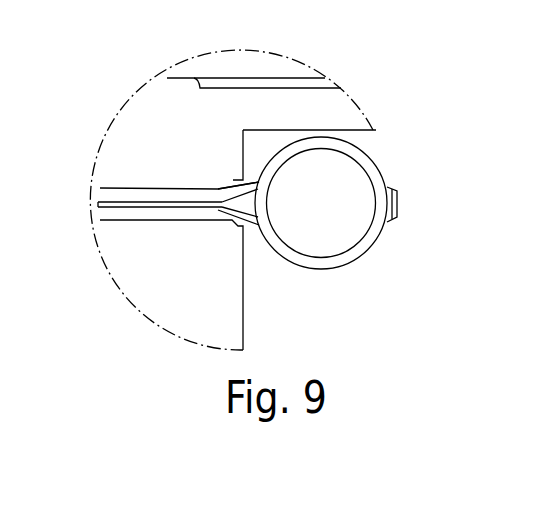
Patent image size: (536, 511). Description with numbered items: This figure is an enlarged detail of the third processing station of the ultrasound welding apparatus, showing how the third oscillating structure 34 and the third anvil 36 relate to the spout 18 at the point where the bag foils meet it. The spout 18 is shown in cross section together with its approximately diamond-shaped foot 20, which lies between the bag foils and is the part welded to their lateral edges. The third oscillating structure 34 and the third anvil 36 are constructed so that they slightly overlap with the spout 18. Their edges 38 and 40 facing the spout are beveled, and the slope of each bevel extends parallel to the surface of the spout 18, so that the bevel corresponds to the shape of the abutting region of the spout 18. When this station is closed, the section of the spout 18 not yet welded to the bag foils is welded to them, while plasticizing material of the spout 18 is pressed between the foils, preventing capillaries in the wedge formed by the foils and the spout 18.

The spout 18 is at (336, 179).
The foot 20 is at (247, 198).
The third oscillating structure 34 is at (137, 278).
The third anvil 36 is at (272, 102).
The edge 38 is at (237, 228).
The edge 40 is at (240, 185).